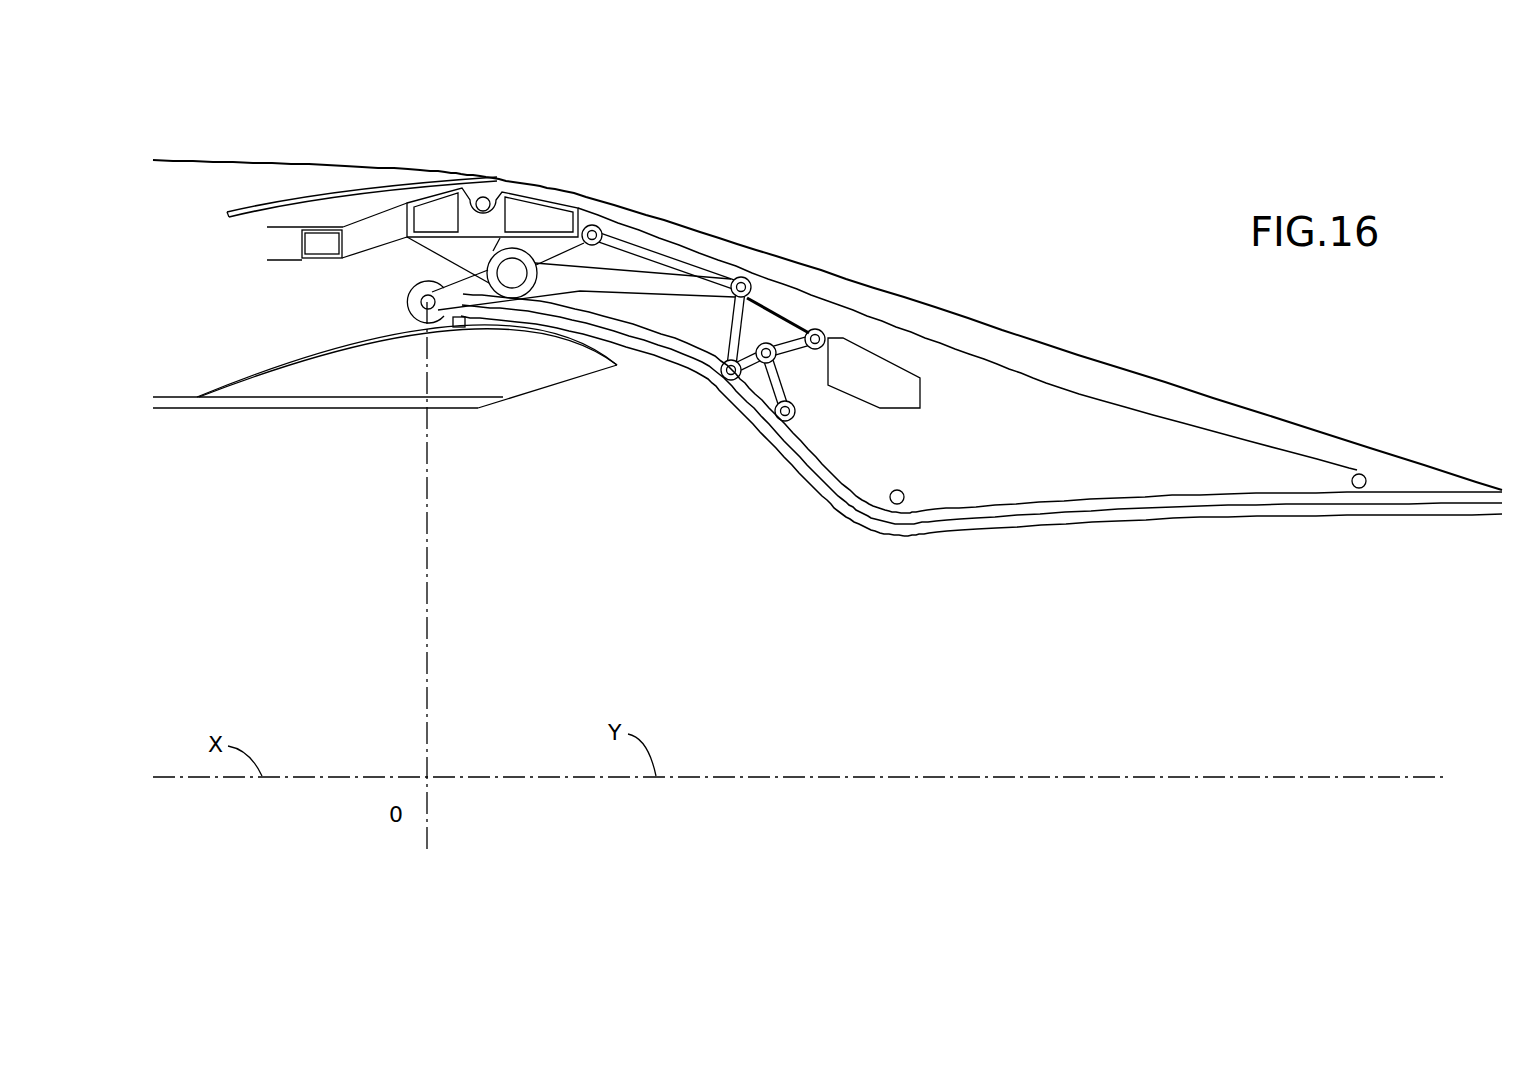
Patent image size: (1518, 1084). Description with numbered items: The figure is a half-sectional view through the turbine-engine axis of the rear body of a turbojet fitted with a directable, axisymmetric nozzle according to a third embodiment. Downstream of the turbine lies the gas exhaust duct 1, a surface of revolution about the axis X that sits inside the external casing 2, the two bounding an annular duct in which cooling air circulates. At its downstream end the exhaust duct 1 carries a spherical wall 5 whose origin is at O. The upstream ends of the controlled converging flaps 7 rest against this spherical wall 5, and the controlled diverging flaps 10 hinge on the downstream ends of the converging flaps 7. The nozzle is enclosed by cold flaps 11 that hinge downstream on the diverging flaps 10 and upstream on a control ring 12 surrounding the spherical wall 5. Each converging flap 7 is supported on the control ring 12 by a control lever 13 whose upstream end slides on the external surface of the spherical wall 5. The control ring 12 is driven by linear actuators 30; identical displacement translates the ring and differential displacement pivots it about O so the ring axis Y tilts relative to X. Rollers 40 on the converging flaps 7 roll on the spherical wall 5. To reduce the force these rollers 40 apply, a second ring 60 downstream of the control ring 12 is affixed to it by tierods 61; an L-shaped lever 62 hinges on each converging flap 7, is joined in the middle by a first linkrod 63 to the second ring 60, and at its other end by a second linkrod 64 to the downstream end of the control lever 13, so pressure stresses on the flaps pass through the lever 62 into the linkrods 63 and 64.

The gas exhaust duct 1 is at (236, 406).
The external casing 2 is at (188, 158).
The spherical wall 5 is at (264, 360).
The controlled converging flap 7 is at (781, 450).
The controlled diverging flap 10 is at (1193, 508).
The cold flap 11 is at (967, 332).
The control ring 12 is at (522, 212).
The control lever 13 is at (630, 278).
The linear actuator 30 is at (279, 257).
The roller 40 is at (418, 291).
The second ring 60 is at (908, 392).
The tierod 61 is at (652, 260).
The L-shaped lever 62 is at (742, 380).
The first linkrod 63 is at (788, 337).
The second linkrod 64 is at (733, 323).